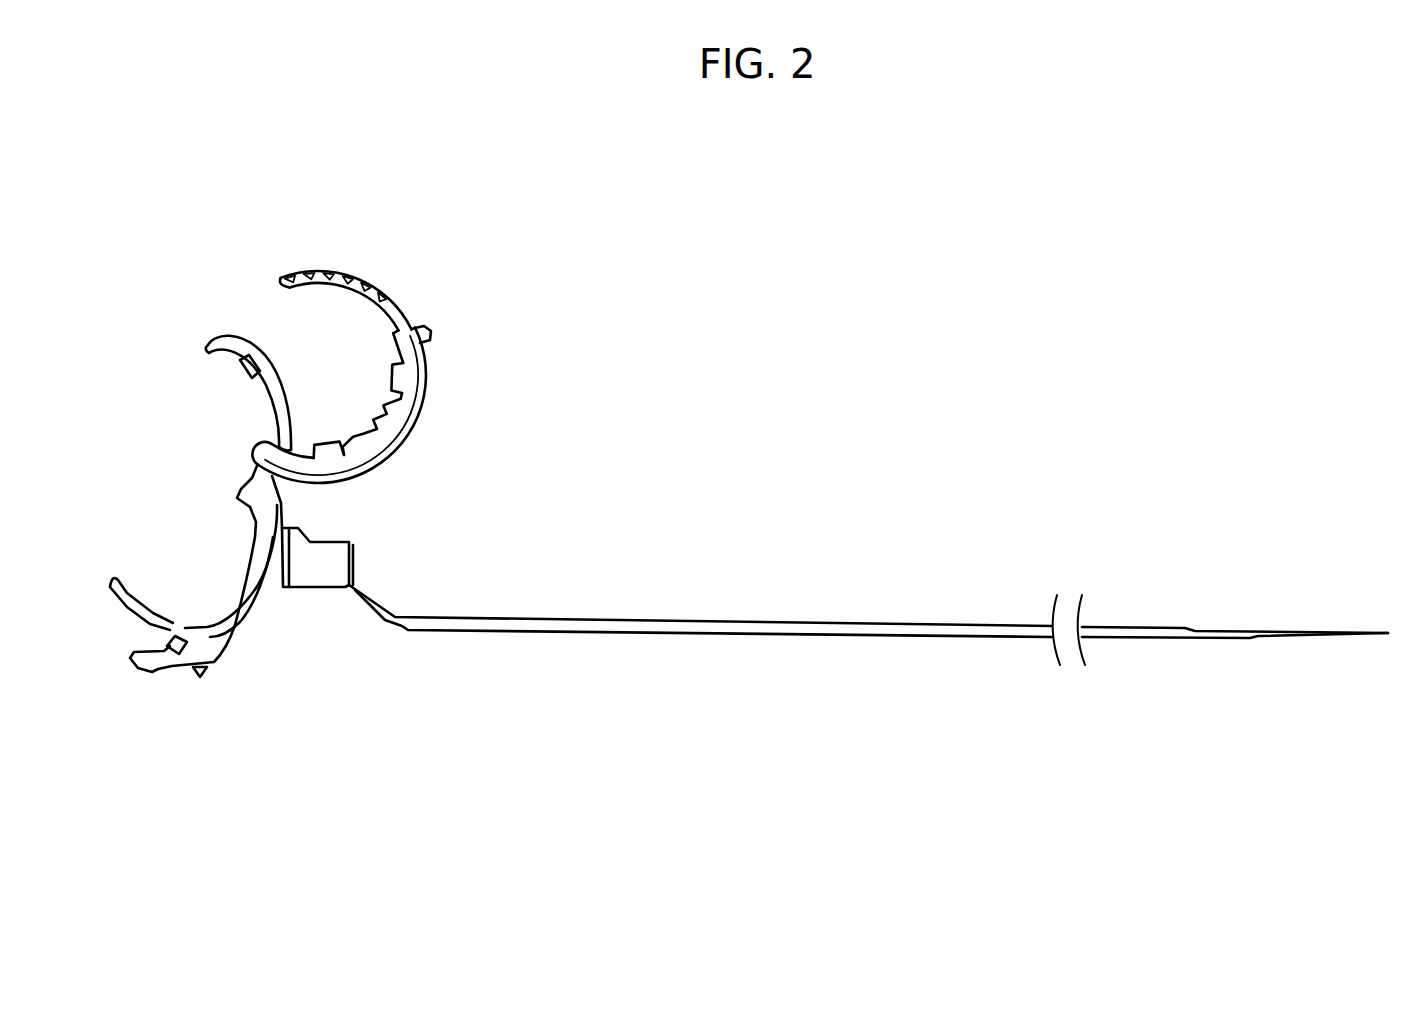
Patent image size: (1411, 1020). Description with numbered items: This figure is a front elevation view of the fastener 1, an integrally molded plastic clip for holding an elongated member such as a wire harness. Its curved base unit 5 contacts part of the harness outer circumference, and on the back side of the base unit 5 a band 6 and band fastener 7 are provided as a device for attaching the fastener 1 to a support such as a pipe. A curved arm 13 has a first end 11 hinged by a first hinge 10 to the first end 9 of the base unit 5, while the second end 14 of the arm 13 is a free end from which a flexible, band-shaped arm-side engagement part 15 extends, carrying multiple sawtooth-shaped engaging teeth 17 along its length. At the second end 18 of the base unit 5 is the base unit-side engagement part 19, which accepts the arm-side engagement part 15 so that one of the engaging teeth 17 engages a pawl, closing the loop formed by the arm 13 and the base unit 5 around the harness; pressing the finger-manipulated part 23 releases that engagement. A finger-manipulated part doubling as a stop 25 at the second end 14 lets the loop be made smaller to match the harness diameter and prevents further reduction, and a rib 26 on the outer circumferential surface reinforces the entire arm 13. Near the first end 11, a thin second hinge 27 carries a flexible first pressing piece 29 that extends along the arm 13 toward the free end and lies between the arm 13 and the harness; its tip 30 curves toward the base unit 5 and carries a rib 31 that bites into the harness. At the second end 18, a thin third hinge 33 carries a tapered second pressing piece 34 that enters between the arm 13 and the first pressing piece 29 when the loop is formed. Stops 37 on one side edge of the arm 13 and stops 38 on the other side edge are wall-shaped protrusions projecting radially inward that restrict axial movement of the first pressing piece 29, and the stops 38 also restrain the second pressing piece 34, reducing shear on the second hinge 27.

The fastener 1 is at (417, 226).
The base unit 5 is at (246, 615).
The band 6 is at (807, 633).
The band fastener 7 is at (352, 563).
The first end of the base unit 9 is at (250, 490).
The first hinge 10 is at (256, 458).
The first end of the arm 11 is at (300, 474).
The arm 13 is at (428, 386).
The second end of the arm 14 is at (416, 323).
The arm-side engagement part 15 is at (316, 292).
The engaging teeth 17 is at (343, 276).
The second end of the base unit 18 is at (212, 622).
The base unit-side engagement part 19 is at (207, 674).
The finger-manipulated part 23 is at (132, 668).
The stop 25 is at (432, 335).
The rib 26 is at (421, 428).
The second hinge 27 is at (298, 443).
The first pressing piece 29 is at (282, 413).
The tip of the first pressing piece 30 is at (207, 346).
The rib 31 is at (243, 368).
The third hinge 33 is at (172, 625).
The second pressing piece 34 is at (125, 612).
The stops 37 is at (400, 412).
The stops 38 is at (335, 444).